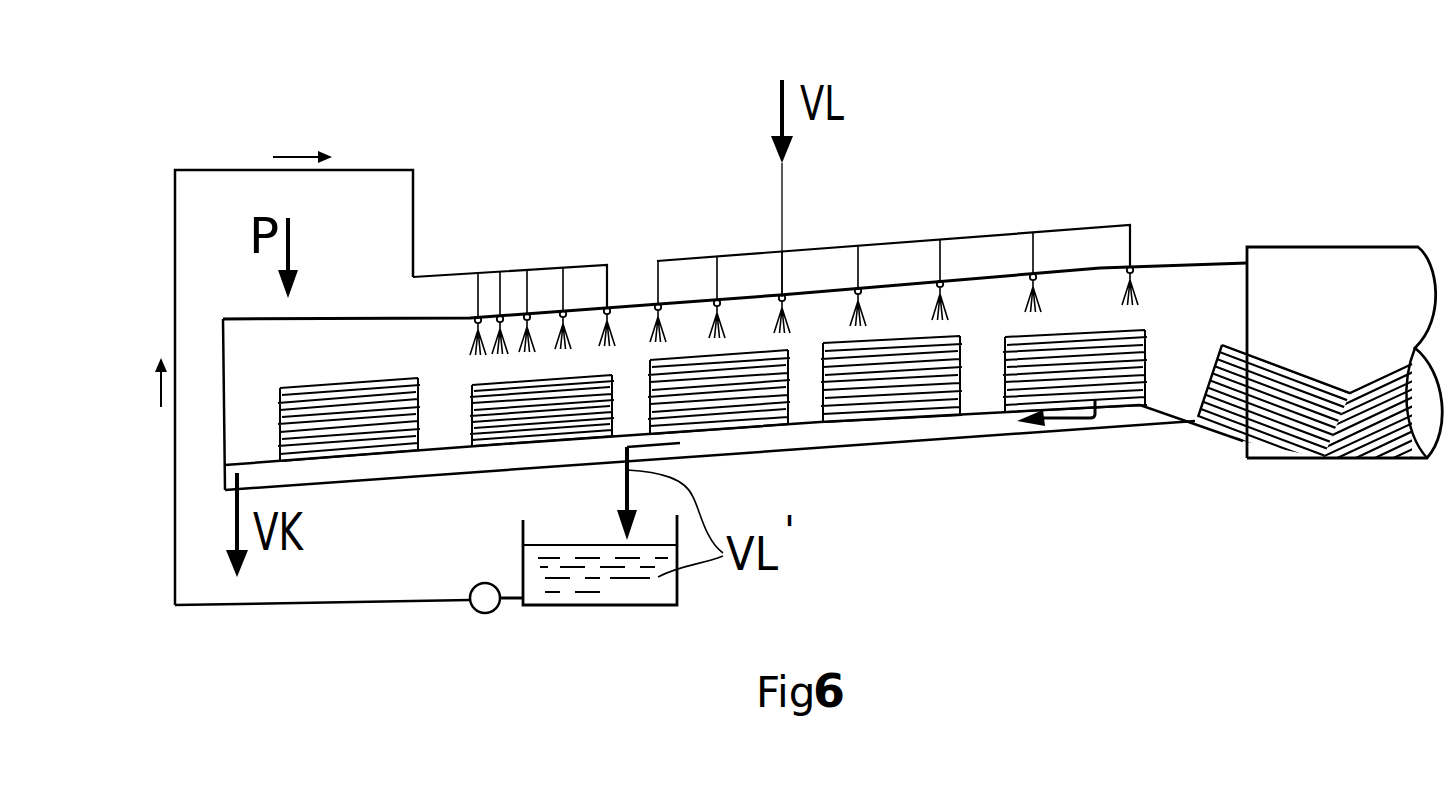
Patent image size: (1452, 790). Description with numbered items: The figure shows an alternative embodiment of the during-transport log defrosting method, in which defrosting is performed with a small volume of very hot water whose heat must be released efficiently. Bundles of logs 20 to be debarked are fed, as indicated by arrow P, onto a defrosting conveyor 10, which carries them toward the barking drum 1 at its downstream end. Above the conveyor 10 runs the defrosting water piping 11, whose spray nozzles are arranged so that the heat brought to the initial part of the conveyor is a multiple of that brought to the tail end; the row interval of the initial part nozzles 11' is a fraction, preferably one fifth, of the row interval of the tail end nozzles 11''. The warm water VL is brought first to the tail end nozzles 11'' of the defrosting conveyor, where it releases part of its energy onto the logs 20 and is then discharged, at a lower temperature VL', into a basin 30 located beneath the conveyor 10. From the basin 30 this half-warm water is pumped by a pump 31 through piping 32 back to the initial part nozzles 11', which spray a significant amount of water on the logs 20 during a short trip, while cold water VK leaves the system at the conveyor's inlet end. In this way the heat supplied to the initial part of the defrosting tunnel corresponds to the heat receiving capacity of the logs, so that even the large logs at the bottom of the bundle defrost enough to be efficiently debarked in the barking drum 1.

The barking drum 1 is at (1330, 292).
The defrosting conveyor 10 is at (897, 310).
The defrosting water pipes 11 is at (771, 205).
The initial part nozzles 11' is at (542, 259).
The tail end nozzles 11'' is at (1081, 208).
The logs 20 is at (505, 430).
The basin 30 is at (560, 607).
The pump 31 is at (485, 613).
The piping 32 is at (212, 170).